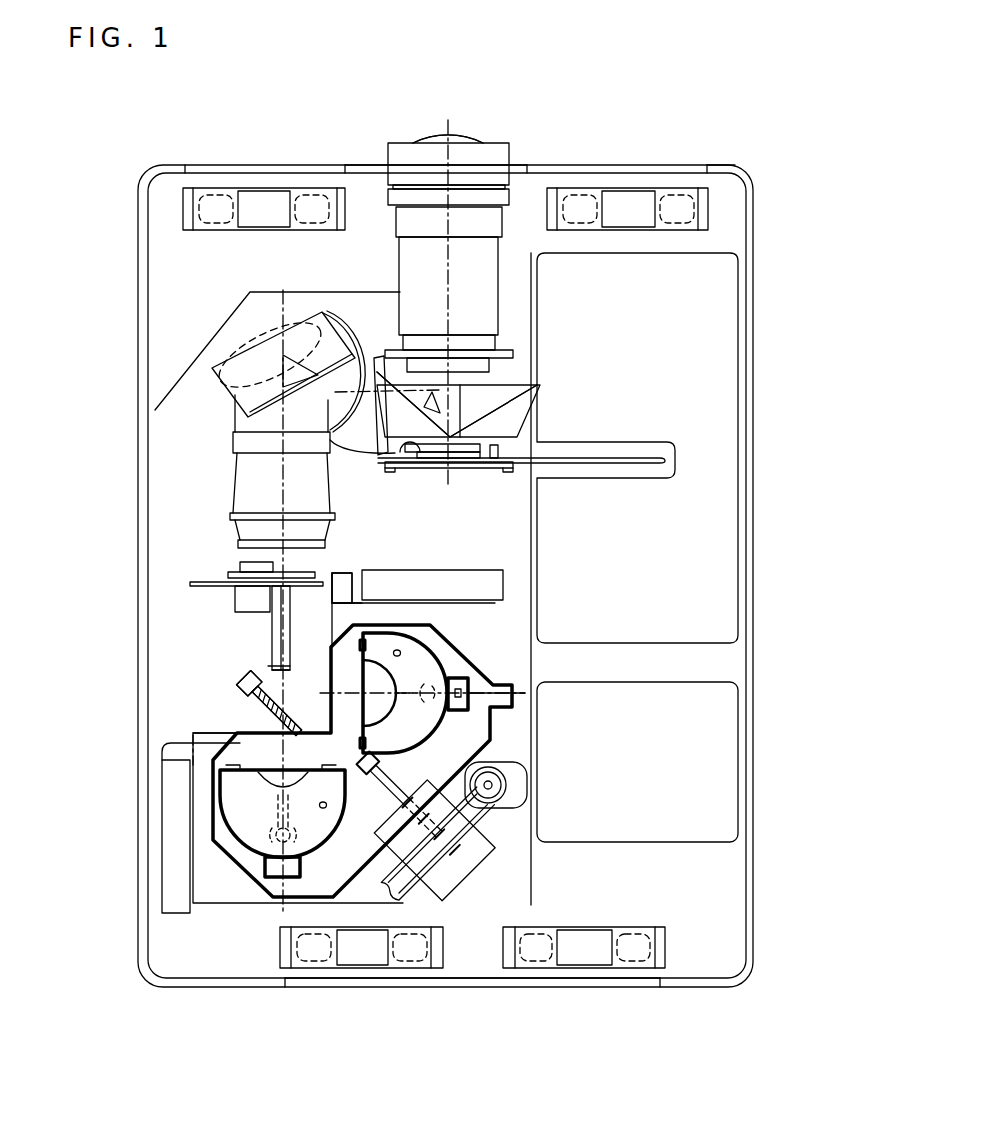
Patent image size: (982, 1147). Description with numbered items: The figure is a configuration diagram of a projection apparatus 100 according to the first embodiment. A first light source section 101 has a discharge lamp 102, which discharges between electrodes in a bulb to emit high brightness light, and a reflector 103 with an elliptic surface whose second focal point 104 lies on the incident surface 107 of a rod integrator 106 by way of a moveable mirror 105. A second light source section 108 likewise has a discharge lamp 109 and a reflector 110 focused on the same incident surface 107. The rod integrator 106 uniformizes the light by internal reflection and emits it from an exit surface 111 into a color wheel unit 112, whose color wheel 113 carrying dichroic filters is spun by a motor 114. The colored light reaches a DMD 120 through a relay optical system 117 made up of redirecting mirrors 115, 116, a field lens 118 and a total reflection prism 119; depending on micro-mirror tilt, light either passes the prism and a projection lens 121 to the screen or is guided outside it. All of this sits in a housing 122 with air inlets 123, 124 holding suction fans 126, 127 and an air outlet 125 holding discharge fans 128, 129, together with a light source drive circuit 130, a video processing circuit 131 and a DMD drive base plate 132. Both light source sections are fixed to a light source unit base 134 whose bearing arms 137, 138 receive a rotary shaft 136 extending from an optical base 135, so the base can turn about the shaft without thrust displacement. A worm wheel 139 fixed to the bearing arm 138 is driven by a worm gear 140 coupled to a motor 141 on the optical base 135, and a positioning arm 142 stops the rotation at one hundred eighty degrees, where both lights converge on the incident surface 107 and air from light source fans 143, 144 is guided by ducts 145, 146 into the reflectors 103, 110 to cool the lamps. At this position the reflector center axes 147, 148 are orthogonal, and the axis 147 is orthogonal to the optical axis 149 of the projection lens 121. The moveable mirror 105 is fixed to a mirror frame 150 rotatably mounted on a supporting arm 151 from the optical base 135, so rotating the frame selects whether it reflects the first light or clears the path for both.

The projection apparatus 100 is at (125, 137).
The first light source section 101 is at (396, 640).
The discharge lamp 102 is at (340, 655).
The reflector 103 is at (430, 745).
The focal point 104 is at (272, 672).
The moveable mirror 105 is at (243, 690).
The rod integrator 106 is at (274, 626).
The incident surface 107 is at (278, 668).
The second light source section 108 is at (222, 854).
The discharge lamp 109 is at (274, 836).
The reflector 110 is at (267, 872).
The exit surface 111 is at (262, 580).
The color wheel unit 112 is at (342, 600).
The color wheel 113 is at (315, 582).
The motor 114 is at (238, 600).
The redirecting mirror 115 is at (222, 365).
The redirecting mirror 116 is at (326, 462).
The relay optical system 117 is at (262, 485).
The field lens 118 is at (376, 370).
The total reflection prism 119 is at (532, 392).
The DMD 120 is at (470, 430).
The projection lens 121 is at (480, 307).
The housing 122 is at (527, 170).
The air inlet 123 is at (192, 166).
The air inlet 124 is at (680, 165).
The air outlet 125 is at (483, 980).
The suction fan 126 is at (192, 210).
The suction fan 127 is at (693, 208).
The discharge fan 128 is at (402, 960).
The discharge fan 129 is at (548, 965).
The light source drive circuit 130 is at (718, 704).
The video processing circuit 131 is at (707, 512).
The DMD drive base plate 132 is at (632, 456).
The light source unit base 134 is at (432, 690).
The optical base 135 is at (172, 402).
The rotary shaft 136 is at (445, 848).
The bearing arm 137 is at (372, 773).
The bearing arm 138 is at (458, 848).
The worm wheel 139 is at (410, 870).
The worm gear 140 is at (496, 795).
The motor 141 is at (472, 791).
The positioning arm 142 is at (512, 690).
The light source fan 143 is at (485, 584).
The light source fan 144 is at (172, 780).
The duct 145 is at (372, 603).
The duct 146 is at (170, 758).
The reflector center axis 147 is at (462, 680).
The reflector center axis 148 is at (222, 784).
The optical axis 149 is at (450, 162).
The mirror frame 150 is at (292, 710).
The supporting arm 151 is at (244, 680).